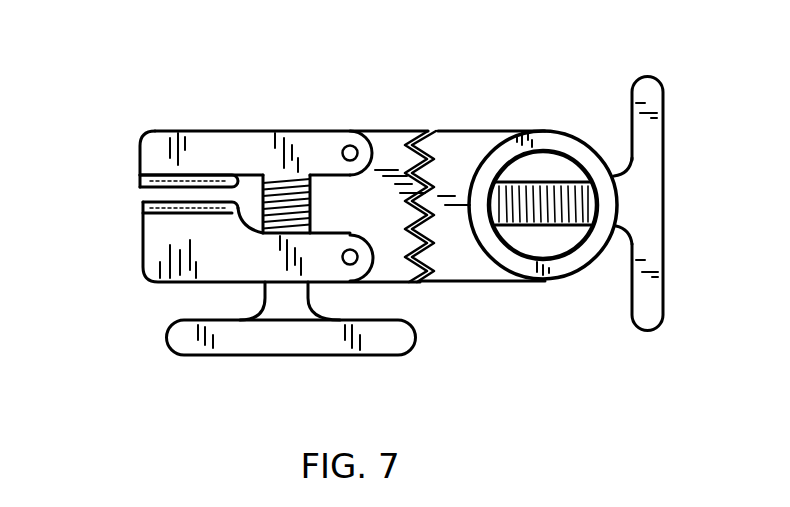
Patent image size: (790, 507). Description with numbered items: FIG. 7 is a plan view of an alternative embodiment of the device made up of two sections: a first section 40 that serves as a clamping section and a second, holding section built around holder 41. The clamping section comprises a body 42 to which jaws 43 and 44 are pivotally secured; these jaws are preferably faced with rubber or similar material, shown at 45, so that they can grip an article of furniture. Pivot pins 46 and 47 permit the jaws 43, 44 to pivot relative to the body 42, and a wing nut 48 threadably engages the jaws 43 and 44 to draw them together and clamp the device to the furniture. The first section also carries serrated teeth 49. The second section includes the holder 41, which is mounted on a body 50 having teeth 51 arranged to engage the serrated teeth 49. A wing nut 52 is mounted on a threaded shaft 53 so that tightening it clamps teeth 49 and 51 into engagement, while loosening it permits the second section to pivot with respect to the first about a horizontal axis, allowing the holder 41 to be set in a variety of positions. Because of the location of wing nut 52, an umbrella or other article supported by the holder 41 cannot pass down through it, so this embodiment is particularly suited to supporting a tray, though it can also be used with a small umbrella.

The first section 40 is at (224, 115).
The holder 41 is at (545, 137).
The body 42 is at (393, 148).
The jaw 43 is at (165, 145).
The jaw 44 is at (158, 240).
The rubber facing 45 is at (148, 188).
The pivot pin 46 is at (352, 146).
The pivot pin 47 is at (351, 265).
The wing nut 48 is at (237, 357).
The serrated teeth 49 is at (415, 242).
The body 50 is at (473, 262).
The teeth 51 is at (430, 240).
The wing nut 52 is at (650, 165).
The threaded shaft 53 is at (556, 180).